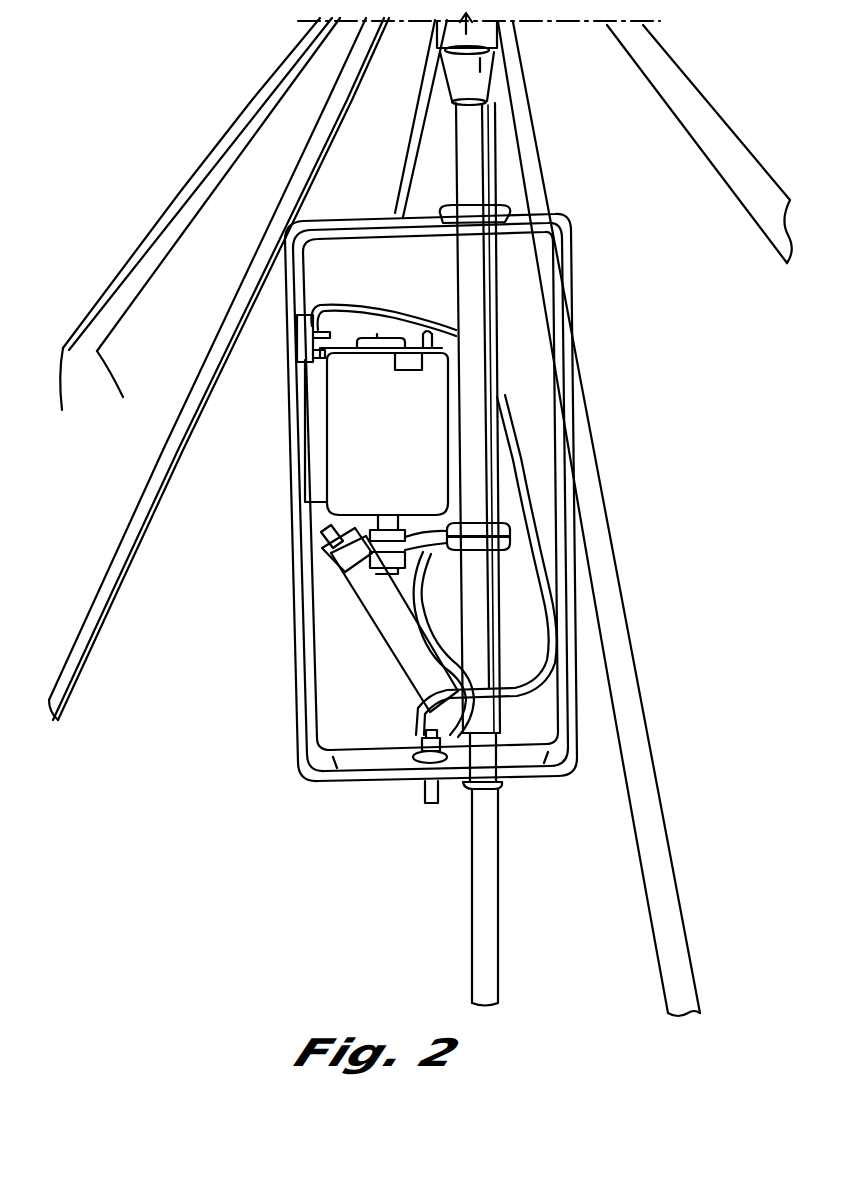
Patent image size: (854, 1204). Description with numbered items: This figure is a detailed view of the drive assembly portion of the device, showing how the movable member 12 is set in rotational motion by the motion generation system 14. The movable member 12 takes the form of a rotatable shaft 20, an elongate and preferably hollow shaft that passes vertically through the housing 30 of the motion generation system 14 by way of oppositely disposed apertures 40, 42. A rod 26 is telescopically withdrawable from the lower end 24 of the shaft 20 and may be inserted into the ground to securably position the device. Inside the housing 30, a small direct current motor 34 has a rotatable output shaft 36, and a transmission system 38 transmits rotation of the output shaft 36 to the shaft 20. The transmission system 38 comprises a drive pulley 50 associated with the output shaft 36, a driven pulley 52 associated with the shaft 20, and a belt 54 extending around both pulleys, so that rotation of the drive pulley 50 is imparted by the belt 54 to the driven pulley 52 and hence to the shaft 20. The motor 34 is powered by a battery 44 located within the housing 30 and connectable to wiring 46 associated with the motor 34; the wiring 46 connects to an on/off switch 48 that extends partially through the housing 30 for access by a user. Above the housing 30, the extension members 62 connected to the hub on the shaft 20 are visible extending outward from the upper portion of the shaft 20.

The movable member 12 is at (499, 146).
The motion generation system 14 is at (233, 523).
The rotatable shaft 20 is at (490, 275).
The end 24 is at (453, 781).
The rod 26 is at (497, 880).
The housing 30 is at (541, 481).
The motor 34 is at (352, 407).
The output shaft 36 is at (389, 516).
The transmission system 38 is at (440, 488).
The aperture 40 is at (443, 212).
The aperture 42 is at (503, 787).
The battery 44 is at (353, 557).
The wiring 46 is at (513, 445).
The on/off switch 48 is at (423, 757).
The drive pulley 50 is at (372, 528).
The driven pulley 52 is at (480, 520).
The belt 54 is at (510, 540).
The extension members 62 is at (718, 160).